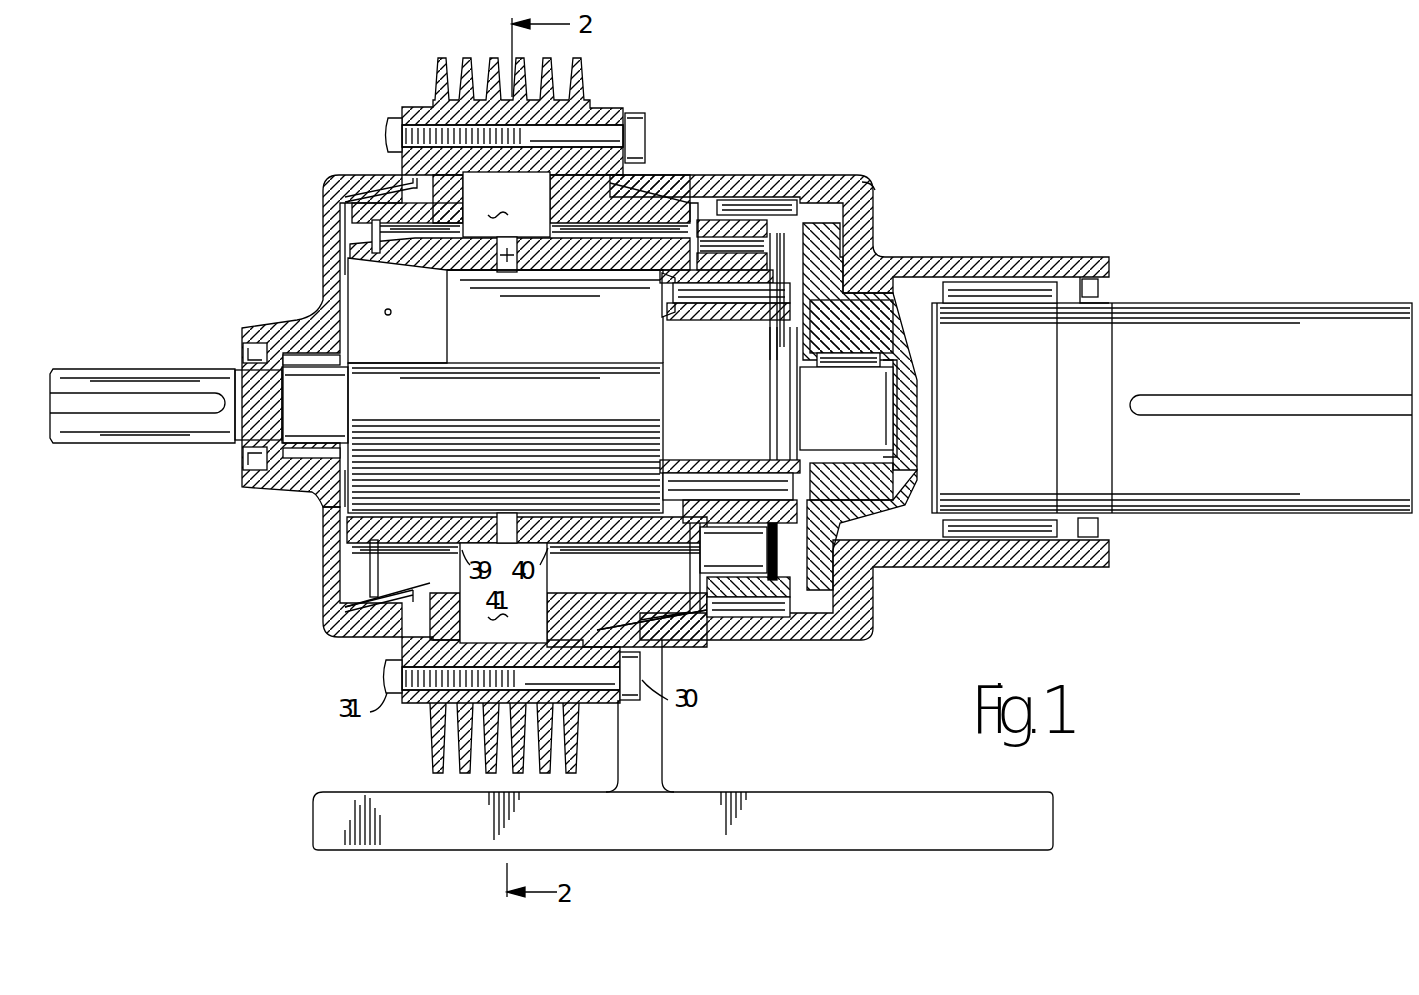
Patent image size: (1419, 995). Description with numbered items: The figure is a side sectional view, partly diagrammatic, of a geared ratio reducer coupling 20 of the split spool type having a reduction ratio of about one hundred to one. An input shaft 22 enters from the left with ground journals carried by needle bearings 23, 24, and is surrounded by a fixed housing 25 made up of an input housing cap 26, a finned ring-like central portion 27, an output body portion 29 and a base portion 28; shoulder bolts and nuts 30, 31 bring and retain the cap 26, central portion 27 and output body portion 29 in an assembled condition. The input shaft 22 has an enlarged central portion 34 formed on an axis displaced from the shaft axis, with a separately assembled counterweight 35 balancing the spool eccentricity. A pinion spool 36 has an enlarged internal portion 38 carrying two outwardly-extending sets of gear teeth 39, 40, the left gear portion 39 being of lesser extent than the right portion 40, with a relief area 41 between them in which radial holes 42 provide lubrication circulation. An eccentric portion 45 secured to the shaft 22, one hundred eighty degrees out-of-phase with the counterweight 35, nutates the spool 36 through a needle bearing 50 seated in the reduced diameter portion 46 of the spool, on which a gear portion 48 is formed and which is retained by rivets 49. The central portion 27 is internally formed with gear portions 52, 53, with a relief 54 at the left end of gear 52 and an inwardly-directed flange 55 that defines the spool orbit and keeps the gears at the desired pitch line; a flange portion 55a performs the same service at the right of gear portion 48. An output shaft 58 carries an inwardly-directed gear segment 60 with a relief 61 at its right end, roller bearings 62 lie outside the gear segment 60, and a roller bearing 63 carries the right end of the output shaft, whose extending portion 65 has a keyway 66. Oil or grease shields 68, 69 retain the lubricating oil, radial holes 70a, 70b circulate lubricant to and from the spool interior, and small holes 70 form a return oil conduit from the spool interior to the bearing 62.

The geared ratio reducer coupling 20 is at (203, 297).
The input shaft 22 is at (99, 370).
The needle bearing 23 is at (280, 478).
The needle bearing 24 is at (855, 363).
The fixed housing 25 is at (318, 605).
The input housing cap 26 is at (320, 278).
The finned ring-like central portion 27 is at (497, 62).
The base portion 28 is at (333, 792).
The output body portion 29 is at (805, 185).
The shoulder bolts and nuts 30 is at (650, 112).
The shoulder bolts and nuts 31 is at (390, 118).
The enlarged central portion 34 is at (517, 355).
The counterweight 35 is at (568, 380).
The pinion spool 36 is at (620, 245).
The enlarged internal portion 38 is at (407, 258).
The gear teeth 39 is at (448, 232).
The gear teeth 40 is at (603, 232).
The relief area 41 is at (506, 204).
The radial holes 42 is at (497, 268).
The eccentric portion 45 is at (790, 378).
The reduced diameter portion 46 is at (735, 275).
The gear portion 48 is at (745, 240).
The rivets 49 is at (662, 292).
The needle bearing 50 is at (785, 445).
The gear portion 52 is at (392, 590).
The gear portion 53 is at (667, 590).
The relief 54 is at (370, 565).
The inwardly-directed flange 55 is at (365, 205).
The flange portion 55a is at (786, 250).
The output shaft 58 is at (830, 287).
The gear segment 60 is at (745, 575).
The relief 61 is at (775, 582).
The roller bearings 62 is at (703, 615).
The roller bearing 63 is at (996, 530).
The extending portion 65 is at (1170, 305).
The keyway 66 is at (1225, 430).
The oil or grease shield 68 is at (240, 356).
The oil or grease shield 69 is at (1085, 540).
The small holes 70 is at (735, 350).
The radial hole 70a is at (365, 240).
The radial hole 70b is at (865, 185).